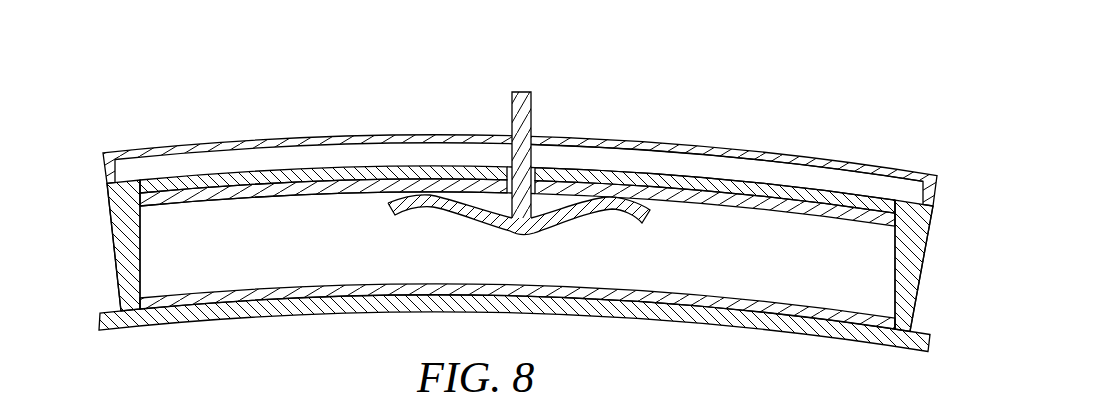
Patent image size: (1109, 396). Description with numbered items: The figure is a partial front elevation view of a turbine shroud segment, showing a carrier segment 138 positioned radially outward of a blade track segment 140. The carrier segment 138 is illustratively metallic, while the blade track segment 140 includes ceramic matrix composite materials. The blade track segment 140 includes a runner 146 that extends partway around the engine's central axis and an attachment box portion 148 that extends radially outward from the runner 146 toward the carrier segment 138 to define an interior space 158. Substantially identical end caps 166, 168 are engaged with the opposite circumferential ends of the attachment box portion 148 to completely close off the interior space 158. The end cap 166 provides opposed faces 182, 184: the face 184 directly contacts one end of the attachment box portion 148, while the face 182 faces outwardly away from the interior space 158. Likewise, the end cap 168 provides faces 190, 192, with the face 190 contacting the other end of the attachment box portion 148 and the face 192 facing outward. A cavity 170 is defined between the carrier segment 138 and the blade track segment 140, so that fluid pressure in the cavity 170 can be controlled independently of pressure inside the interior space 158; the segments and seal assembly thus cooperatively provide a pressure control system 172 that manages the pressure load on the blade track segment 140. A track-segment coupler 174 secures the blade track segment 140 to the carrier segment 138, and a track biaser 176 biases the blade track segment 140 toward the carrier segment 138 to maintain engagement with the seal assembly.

The carrier segment 138 is at (672, 123).
The blade track segment 140 is at (668, 356).
The runner 146 is at (749, 332).
The attachment box portion 148 is at (815, 185).
The interior space 158 is at (334, 213).
The end cap 166 is at (934, 224).
The end cap 168 is at (110, 210).
The cavity 170 is at (733, 155).
The pressure control system 172 is at (625, 138).
The track-segment coupler 174 is at (548, 114).
The track biaser 176 is at (451, 226).
The face 182 is at (923, 275).
The face 184 is at (895, 265).
The face 190 is at (142, 250).
The face 192 is at (112, 242).